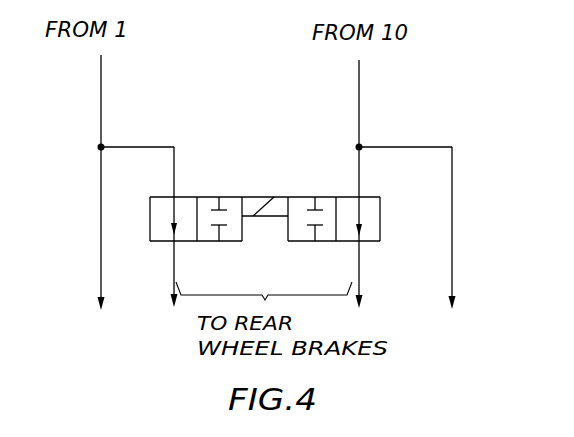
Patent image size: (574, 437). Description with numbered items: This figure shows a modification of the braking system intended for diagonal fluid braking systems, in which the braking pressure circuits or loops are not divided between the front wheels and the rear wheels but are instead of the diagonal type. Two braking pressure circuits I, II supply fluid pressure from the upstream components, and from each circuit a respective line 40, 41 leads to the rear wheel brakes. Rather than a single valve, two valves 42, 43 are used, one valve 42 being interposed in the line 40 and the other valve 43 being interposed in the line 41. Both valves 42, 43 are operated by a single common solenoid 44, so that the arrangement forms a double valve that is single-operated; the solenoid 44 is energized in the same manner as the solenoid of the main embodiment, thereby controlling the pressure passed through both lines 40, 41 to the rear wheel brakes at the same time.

The line 40 is at (173, 172).
The line 41 is at (361, 170).
The valve 42 is at (208, 195).
The valve 43 is at (298, 195).
The solenoid 44 is at (258, 195).
The braking pressure circuit I is at (108, 182).
The braking pressure circuit II is at (394, 184).